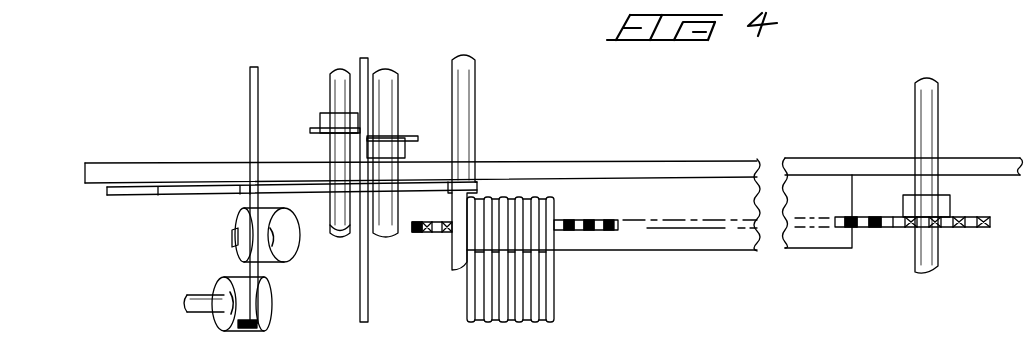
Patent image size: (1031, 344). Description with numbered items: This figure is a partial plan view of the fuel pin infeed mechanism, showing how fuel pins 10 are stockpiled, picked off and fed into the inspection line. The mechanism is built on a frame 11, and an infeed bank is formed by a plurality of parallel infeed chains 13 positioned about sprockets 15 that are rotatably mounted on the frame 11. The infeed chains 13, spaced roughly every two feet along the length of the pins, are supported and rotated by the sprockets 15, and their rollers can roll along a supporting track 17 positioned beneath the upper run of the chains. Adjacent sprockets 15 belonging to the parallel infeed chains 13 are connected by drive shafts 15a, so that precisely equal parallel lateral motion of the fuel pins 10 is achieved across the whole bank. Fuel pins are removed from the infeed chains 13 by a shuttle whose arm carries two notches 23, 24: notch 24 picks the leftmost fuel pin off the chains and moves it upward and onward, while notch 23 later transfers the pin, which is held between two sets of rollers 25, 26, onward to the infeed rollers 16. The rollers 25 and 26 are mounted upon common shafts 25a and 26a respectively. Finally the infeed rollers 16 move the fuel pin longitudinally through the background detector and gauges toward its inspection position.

The fuel pins 10 is at (257, 88).
The frame 11 is at (187, 173).
The infeed chains 13 is at (597, 228).
The sprockets 15 is at (902, 227).
The drive shafts 15a is at (473, 95).
The infeed rollers 16 is at (247, 242).
The supporting track 17 is at (690, 240).
The notch 23 is at (247, 193).
The notch 24 is at (350, 233).
The rollers 25 is at (313, 132).
The common shaft 25a is at (337, 68).
The rollers 26 is at (418, 138).
The common shaft 26a is at (388, 70).